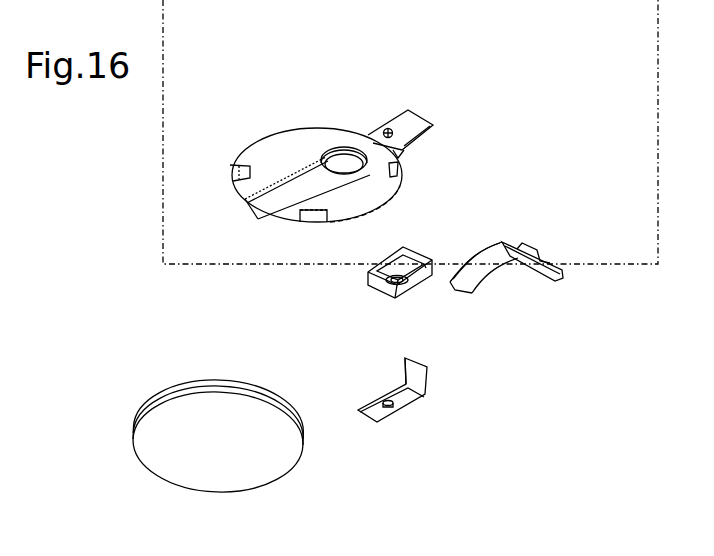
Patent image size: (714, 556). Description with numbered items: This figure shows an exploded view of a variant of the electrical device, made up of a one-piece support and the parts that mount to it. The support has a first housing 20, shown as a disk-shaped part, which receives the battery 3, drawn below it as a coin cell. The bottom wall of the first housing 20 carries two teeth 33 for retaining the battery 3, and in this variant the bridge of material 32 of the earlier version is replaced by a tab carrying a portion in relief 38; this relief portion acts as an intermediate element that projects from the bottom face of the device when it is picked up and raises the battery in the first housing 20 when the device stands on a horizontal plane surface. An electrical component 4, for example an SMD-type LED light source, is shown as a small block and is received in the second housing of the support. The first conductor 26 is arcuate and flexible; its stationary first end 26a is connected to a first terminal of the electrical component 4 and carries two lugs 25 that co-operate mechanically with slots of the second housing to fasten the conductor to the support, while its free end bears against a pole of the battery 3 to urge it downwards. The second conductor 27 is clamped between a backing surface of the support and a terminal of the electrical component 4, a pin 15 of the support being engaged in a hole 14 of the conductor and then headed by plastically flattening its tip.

The battery 3 is at (197, 408).
The electrical component 4 is at (382, 293).
The hole 14 is at (388, 410).
The pin 15 is at (394, 141).
The first housing 20 is at (279, 148).
The lug 25 is at (512, 244).
The first conductor 26 is at (464, 286).
The first end of the first conductor 26a is at (533, 252).
The second conductor 27 is at (423, 378).
The bridge of material 32 is at (280, 202).
The tooth 33 is at (237, 162).
The portion in relief 38 is at (334, 154).